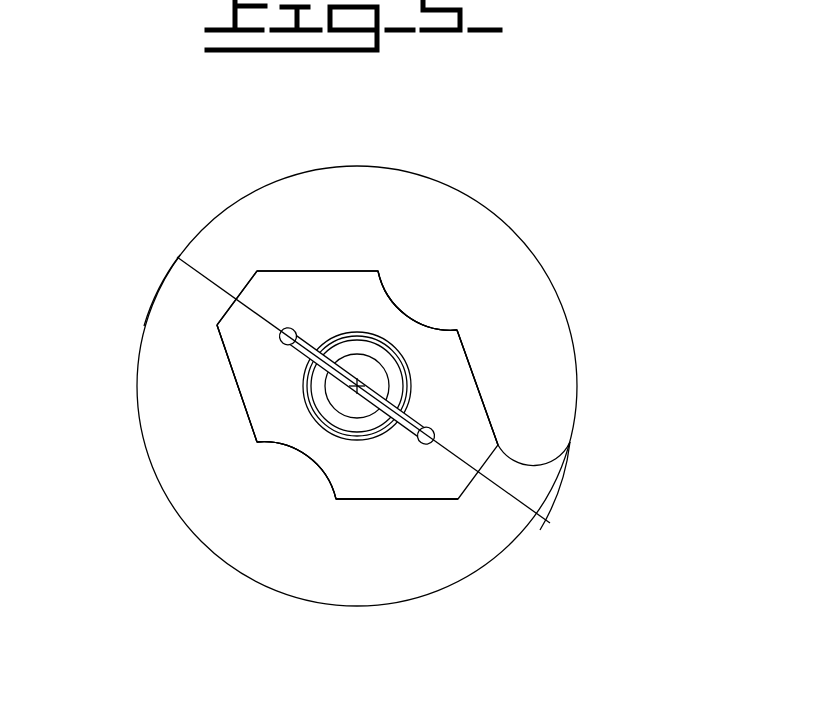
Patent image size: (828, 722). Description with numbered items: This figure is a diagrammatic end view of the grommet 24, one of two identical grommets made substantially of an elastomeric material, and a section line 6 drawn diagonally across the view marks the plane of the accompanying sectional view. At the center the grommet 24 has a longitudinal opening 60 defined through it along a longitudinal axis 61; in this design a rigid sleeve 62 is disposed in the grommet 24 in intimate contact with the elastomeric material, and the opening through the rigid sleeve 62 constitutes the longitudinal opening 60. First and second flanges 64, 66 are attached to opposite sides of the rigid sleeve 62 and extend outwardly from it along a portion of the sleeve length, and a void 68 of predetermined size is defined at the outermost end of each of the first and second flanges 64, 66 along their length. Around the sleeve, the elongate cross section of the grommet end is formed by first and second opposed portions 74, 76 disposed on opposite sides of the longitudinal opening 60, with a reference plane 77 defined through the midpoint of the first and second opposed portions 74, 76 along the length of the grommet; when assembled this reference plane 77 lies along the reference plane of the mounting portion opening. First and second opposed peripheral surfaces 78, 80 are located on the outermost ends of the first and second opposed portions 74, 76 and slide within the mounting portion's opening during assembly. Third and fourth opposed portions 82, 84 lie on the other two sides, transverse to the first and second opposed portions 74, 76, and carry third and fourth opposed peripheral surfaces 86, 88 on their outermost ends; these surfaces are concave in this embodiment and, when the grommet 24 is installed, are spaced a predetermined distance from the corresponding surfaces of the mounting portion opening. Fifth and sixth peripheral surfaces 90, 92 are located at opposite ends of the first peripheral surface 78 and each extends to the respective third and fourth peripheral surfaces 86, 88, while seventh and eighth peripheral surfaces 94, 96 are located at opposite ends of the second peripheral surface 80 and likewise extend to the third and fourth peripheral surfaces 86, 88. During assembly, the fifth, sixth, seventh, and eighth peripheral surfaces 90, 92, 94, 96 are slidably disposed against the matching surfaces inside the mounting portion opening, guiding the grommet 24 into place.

The section line 6- 6 is at (173, 253).
The first grommet 24 is at (168, 448).
The longitudinal opening 60 is at (444, 388).
The longitudinal axis 61 is at (457, 332).
The rigid sleeve 62 is at (387, 357).
The first flange 64 is at (363, 271).
The second flange 66 is at (358, 499).
The void 68 is at (283, 340).
The first opposed portion 74 is at (178, 310).
The second opposed portion 76 is at (537, 495).
The reference plane 77 is at (257, 310).
The first opposed peripheral surface 78 is at (258, 312).
The second opposed peripheral surface 80 is at (566, 455).
The third opposed portion 82 is at (300, 522).
The fourth opposed portion 84 is at (402, 267).
The third opposed peripheral surface 86 is at (303, 455).
The fourth opposed peripheral surface 88 is at (403, 313).
The fifth peripheral surface 90 is at (240, 403).
The sixth peripheral surface 92 is at (341, 271).
The seventh peripheral surface 94 is at (400, 499).
The eighth peripheral surface 96 is at (470, 363).